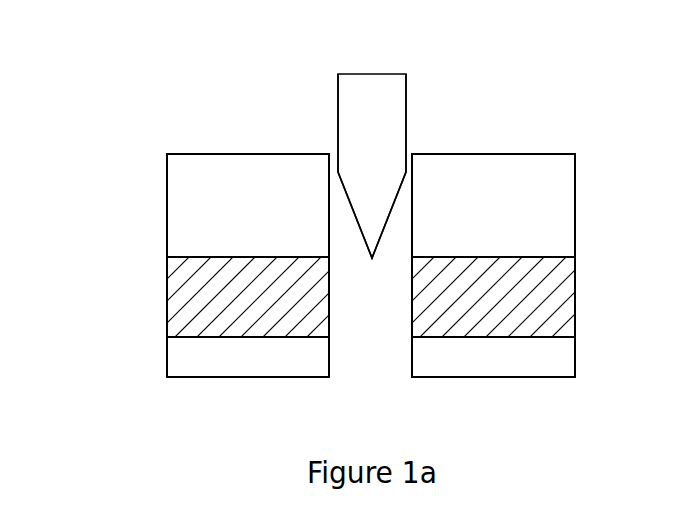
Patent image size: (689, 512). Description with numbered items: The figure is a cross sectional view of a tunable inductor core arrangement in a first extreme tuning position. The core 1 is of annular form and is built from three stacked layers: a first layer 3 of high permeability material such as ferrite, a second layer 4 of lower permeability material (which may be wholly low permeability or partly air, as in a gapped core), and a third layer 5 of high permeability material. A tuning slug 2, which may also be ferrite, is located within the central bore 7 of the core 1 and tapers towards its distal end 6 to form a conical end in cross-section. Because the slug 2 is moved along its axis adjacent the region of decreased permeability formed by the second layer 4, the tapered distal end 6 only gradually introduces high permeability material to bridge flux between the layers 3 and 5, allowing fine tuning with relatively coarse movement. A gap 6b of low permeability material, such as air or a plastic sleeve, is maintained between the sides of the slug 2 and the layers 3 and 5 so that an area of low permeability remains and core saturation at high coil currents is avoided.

The core 1 is at (80, 171).
The tuning slug 2 is at (373, 122).
The first layer 3 is at (187, 363).
The second layer 4 is at (187, 307).
The third layer 5 is at (187, 238).
The distal end 6 is at (370, 225).
The gap 6b is at (333, 157).
The central bore 7 is at (410, 352).